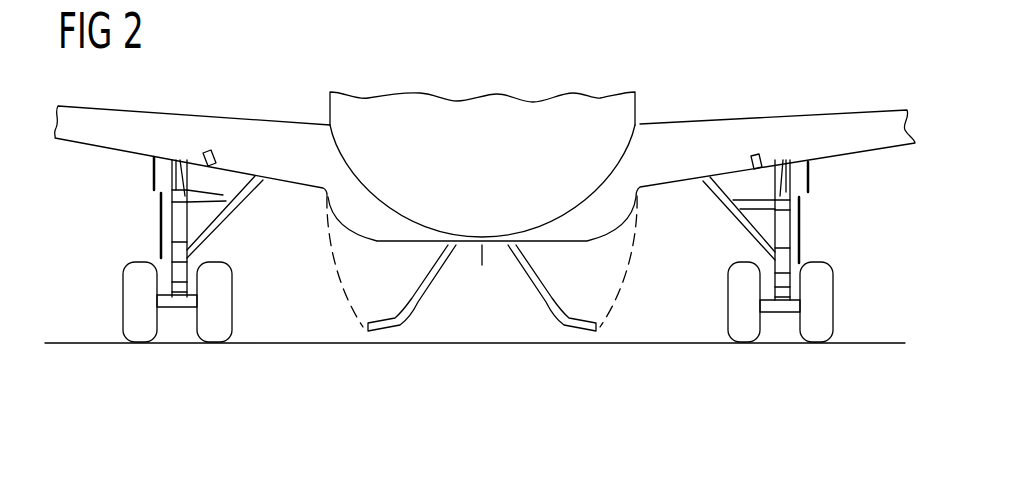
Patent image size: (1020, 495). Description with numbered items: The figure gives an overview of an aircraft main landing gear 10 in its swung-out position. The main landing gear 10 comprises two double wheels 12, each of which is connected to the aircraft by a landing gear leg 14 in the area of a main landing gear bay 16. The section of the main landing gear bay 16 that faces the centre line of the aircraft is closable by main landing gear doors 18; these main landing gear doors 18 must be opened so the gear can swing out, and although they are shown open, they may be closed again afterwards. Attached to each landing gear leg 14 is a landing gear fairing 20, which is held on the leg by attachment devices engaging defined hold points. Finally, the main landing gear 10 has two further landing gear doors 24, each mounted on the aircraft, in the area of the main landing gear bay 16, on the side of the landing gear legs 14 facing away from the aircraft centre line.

The aircraft main landing gear 10 is at (841, 222).
The double wheels 12 is at (176, 359).
The landing gear leg 14 is at (183, 222).
The main landing gear bay 16 is at (664, 218).
The main landing gear doors 18 is at (532, 285).
The landing gear fairing 20 is at (158, 229).
The landing gear doors 24 is at (152, 173).